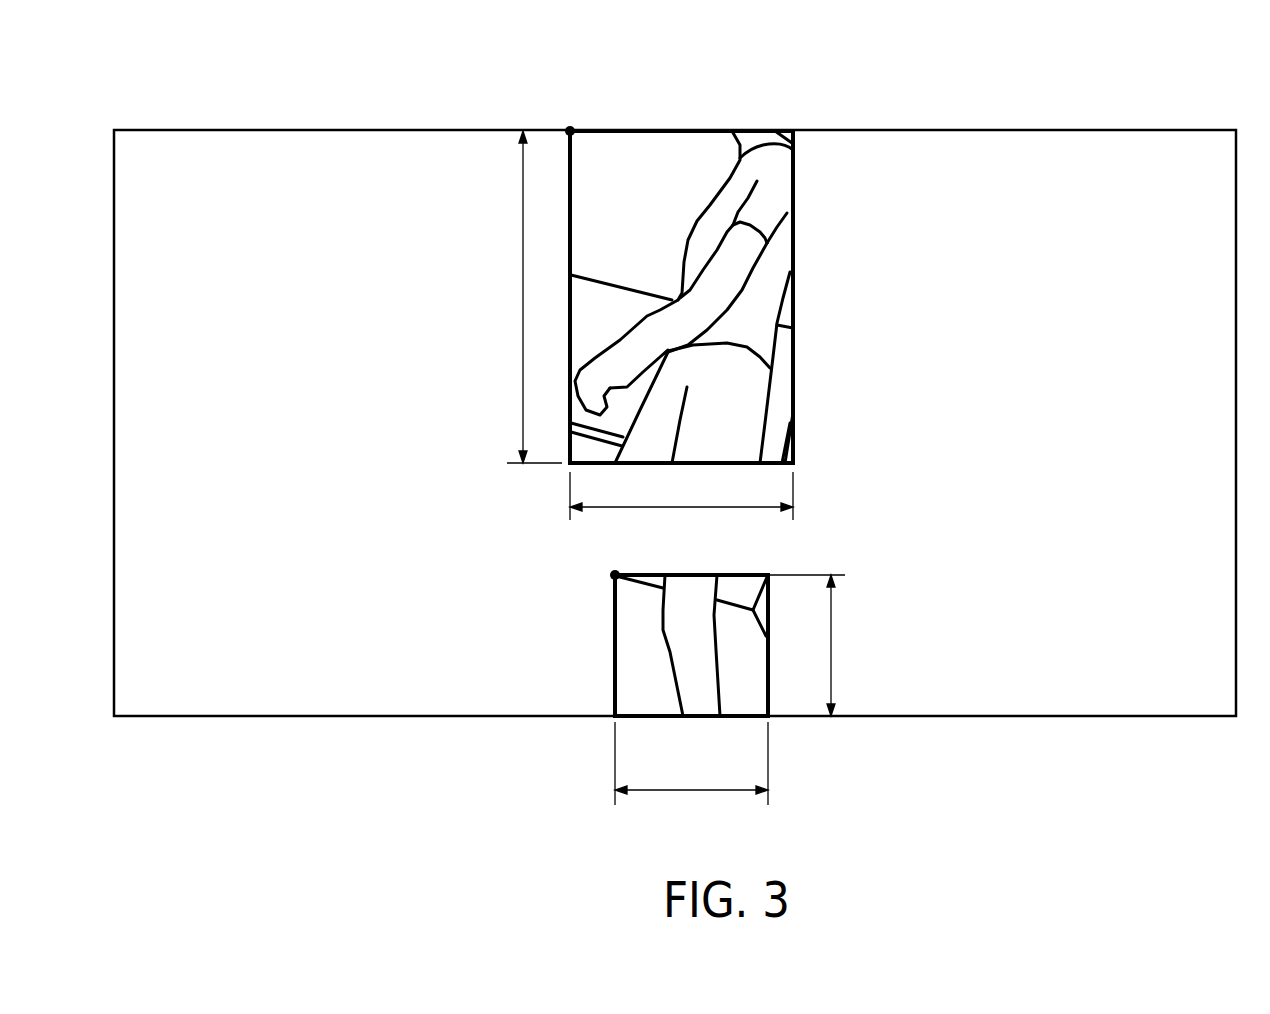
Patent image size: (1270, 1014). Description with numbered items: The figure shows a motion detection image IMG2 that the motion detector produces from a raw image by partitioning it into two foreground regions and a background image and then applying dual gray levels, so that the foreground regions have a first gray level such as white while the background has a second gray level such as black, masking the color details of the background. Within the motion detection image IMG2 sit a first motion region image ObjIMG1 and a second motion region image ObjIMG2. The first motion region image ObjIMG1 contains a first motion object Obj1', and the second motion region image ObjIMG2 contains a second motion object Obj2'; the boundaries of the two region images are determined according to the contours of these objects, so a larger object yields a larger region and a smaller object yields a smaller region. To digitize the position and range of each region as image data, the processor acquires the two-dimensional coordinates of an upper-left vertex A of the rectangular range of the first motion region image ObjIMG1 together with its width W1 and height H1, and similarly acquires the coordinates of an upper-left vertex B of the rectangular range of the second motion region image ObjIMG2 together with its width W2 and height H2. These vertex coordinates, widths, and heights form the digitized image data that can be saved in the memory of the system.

The motion detection image IMG2 is at (168, 130).
The first motion region image ObjIMG1 is at (637, 152).
The first motion object Obj1' is at (682, 250).
The upper-left vertex A is at (570, 131).
The height H1 is at (522, 297).
The width W1 is at (681, 496).
The second motion region image ObjIMG2 is at (615, 685).
The second motion object Obj2' is at (754, 667).
The upper-left vertex B is at (615, 575).
The height H2 is at (807, 645).
The width W2 is at (691, 763).